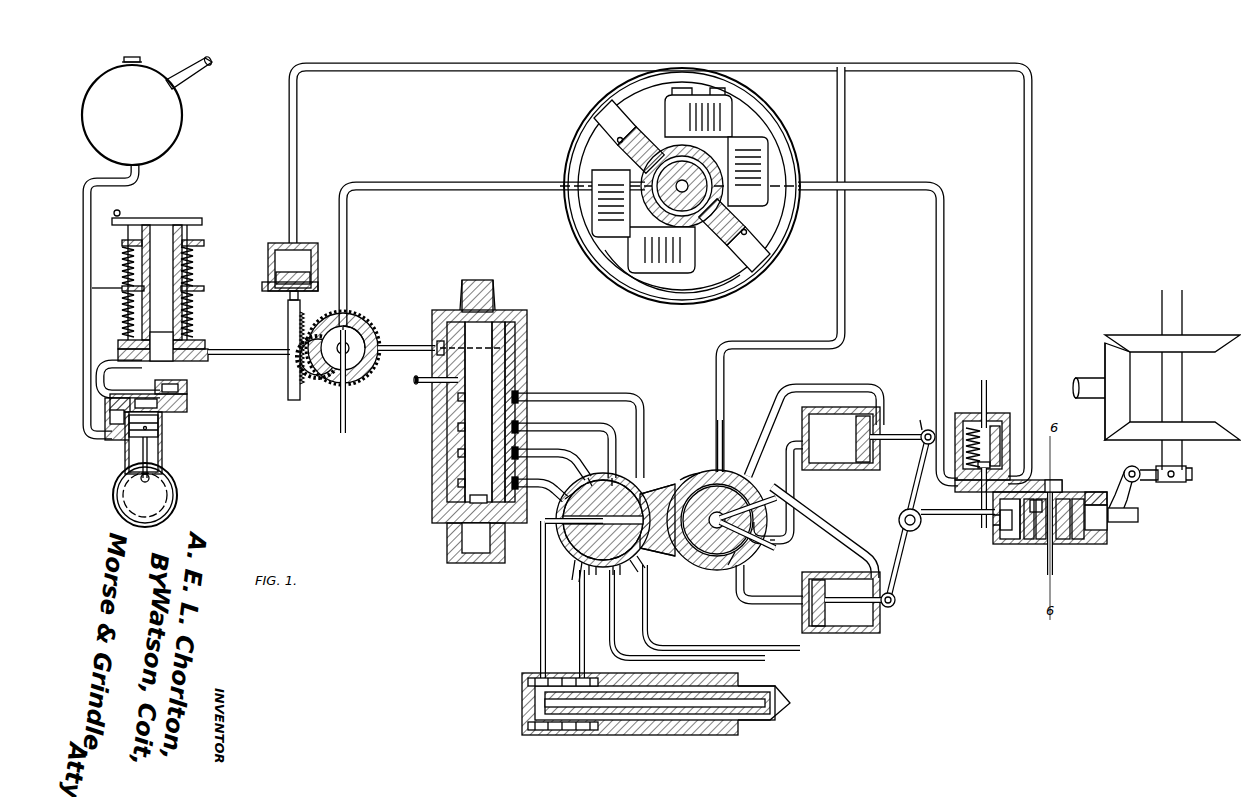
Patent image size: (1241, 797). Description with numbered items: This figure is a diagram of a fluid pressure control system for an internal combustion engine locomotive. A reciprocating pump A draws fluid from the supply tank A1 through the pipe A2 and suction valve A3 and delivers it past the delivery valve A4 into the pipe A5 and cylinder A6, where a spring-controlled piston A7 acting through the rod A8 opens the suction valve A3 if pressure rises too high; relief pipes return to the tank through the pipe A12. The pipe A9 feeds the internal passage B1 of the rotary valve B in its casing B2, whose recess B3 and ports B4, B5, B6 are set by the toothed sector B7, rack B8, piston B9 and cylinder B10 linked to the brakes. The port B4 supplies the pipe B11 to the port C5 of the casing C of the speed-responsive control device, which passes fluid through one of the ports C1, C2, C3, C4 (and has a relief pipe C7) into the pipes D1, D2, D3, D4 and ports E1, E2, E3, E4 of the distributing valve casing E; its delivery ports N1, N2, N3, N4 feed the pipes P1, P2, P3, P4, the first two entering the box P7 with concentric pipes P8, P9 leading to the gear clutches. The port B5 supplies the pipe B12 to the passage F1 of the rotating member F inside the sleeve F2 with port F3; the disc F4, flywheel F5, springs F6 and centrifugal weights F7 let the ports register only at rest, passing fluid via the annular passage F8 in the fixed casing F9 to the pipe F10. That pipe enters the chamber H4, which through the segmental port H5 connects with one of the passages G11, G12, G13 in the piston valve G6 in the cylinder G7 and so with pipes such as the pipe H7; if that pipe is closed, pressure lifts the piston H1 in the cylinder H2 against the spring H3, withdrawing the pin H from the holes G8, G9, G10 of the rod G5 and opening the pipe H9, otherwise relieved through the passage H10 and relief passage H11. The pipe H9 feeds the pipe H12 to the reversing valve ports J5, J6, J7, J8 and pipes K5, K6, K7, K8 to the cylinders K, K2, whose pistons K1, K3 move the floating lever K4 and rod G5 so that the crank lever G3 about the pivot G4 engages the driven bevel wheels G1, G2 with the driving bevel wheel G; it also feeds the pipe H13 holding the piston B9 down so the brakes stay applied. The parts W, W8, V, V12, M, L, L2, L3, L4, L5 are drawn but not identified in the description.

The reciprocating pump A is at (125, 462).
The supply tank A1 is at (132, 115).
The pipe A2 is at (84, 240).
The suction valve A3 is at (105, 418).
The delivery valve A4 is at (187, 388).
The pipe A5 is at (97, 370).
The cylinder A6 is at (165, 343).
The spring-controlled piston A7 is at (160, 262).
The rod A8 is at (90, 289).
The pipe A9 is at (248, 355).
The pipe A12 is at (198, 72).
The rotary valve B is at (362, 372).
The internal passage B1 is at (350, 330).
The casing B2 is at (368, 362).
The recess B3 is at (320, 384).
The port B4 is at (355, 342).
The port B5 is at (347, 322).
The relief port B6 is at (348, 392).
The toothed sector B7 is at (292, 382).
The toothed rack B8 is at (296, 397).
The piston B9 is at (292, 283).
The cylinder B10 is at (288, 257).
The pipe B11 is at (390, 348).
The pipe B12 is at (403, 192).
The casing C is at (435, 481).
The port C1 is at (520, 483).
The port C2 is at (520, 453).
The port C3 is at (520, 425).
The port C4 is at (520, 396).
The port C5 is at (437, 348).
The relief pipe C7 is at (420, 386).
The sleeve W is at (458, 427).
The valve stem W8 is at (482, 290).
The valve member V is at (440, 455).
The valve base V12 is at (450, 546).
The pipe D1 is at (545, 485).
The pipe D2 is at (566, 456).
The pipe D3 is at (608, 428).
The pipe D4 is at (617, 394).
The casing E is at (573, 563).
The port E1 is at (568, 492).
The port E2 is at (590, 478).
The port E3 is at (615, 478).
The port E4 is at (646, 485).
The connecting member M is at (655, 540).
The delivery port N1 is at (550, 525).
The delivery port N2 is at (592, 568).
The delivery port N3 is at (618, 570).
The delivery port N4 is at (650, 570).
The pipe P1 is at (540, 611).
The pipe P2 is at (580, 630).
The pipe P3 is at (610, 629).
The pipe P4 is at (643, 629).
The box P7 is at (580, 735).
The inner pipe P8 is at (676, 714).
The outer pipe P9 is at (722, 720).
The rotary valve L is at (711, 572).
The valve casing L2 is at (688, 478).
The pipe L3 is at (795, 540).
The valve hub L4 is at (740, 545).
The valve rotor L5 is at (707, 552).
The port J5 is at (723, 468).
The port J6 is at (755, 500).
The port J7 is at (762, 548).
The port J8 is at (732, 562).
The cylinder K is at (835, 460).
The piston K1 is at (877, 445).
The second cylinder K2 is at (850, 628).
The piston K3 is at (825, 626).
The floating lever K4 is at (908, 500).
The outlet pipe K5 is at (847, 388).
The outlet pipe K6 is at (845, 530).
The outlet pipe K7 is at (792, 440).
The outlet pipe K8 is at (770, 603).
The pin H is at (975, 506).
The piston H1 is at (1012, 440).
The cylinder H2 is at (952, 430).
The spring H3 is at (972, 420).
The chamber H4 is at (1040, 480).
The segmental port H5 is at (1060, 481).
The pipe H7 is at (1048, 570).
The pipe H9 is at (1030, 296).
The internal passage H10 is at (992, 430).
The relief passage H11 is at (986, 382).
The pipe H12 is at (845, 118).
The pipe H13 is at (290, 110).
The driving bevel wheel G is at (1112, 362).
The driven bevel wheel G1 is at (1140, 340).
The driven bevel wheel G2 is at (1195, 432).
The crank lever G3 is at (1135, 497).
The pivot G4 is at (1127, 468).
The rod G5 is at (945, 522).
The piston valve G6 is at (1078, 545).
The cylinder G7 is at (1020, 548).
The hole G8 is at (1002, 528).
The hole G9 is at (1014, 530).
The hole G10 is at (1028, 525).
The internal passage G11 is at (1040, 525).
The internal passage G12 is at (1062, 545).
The internal passage G13 is at (1100, 546).
The member F is at (760, 135).
The internal passage F1 is at (650, 170).
The rotating sleeve F2 is at (635, 255).
The port F3 is at (745, 205).
The disc F4 is at (645, 118).
The flywheel F5 is at (725, 90).
The springs F6 is at (722, 112).
The centrifugal weights F7 is at (612, 125).
The annular passage F8 is at (740, 225).
The fixed casing F9 is at (740, 270).
The pipe F10 is at (886, 182).